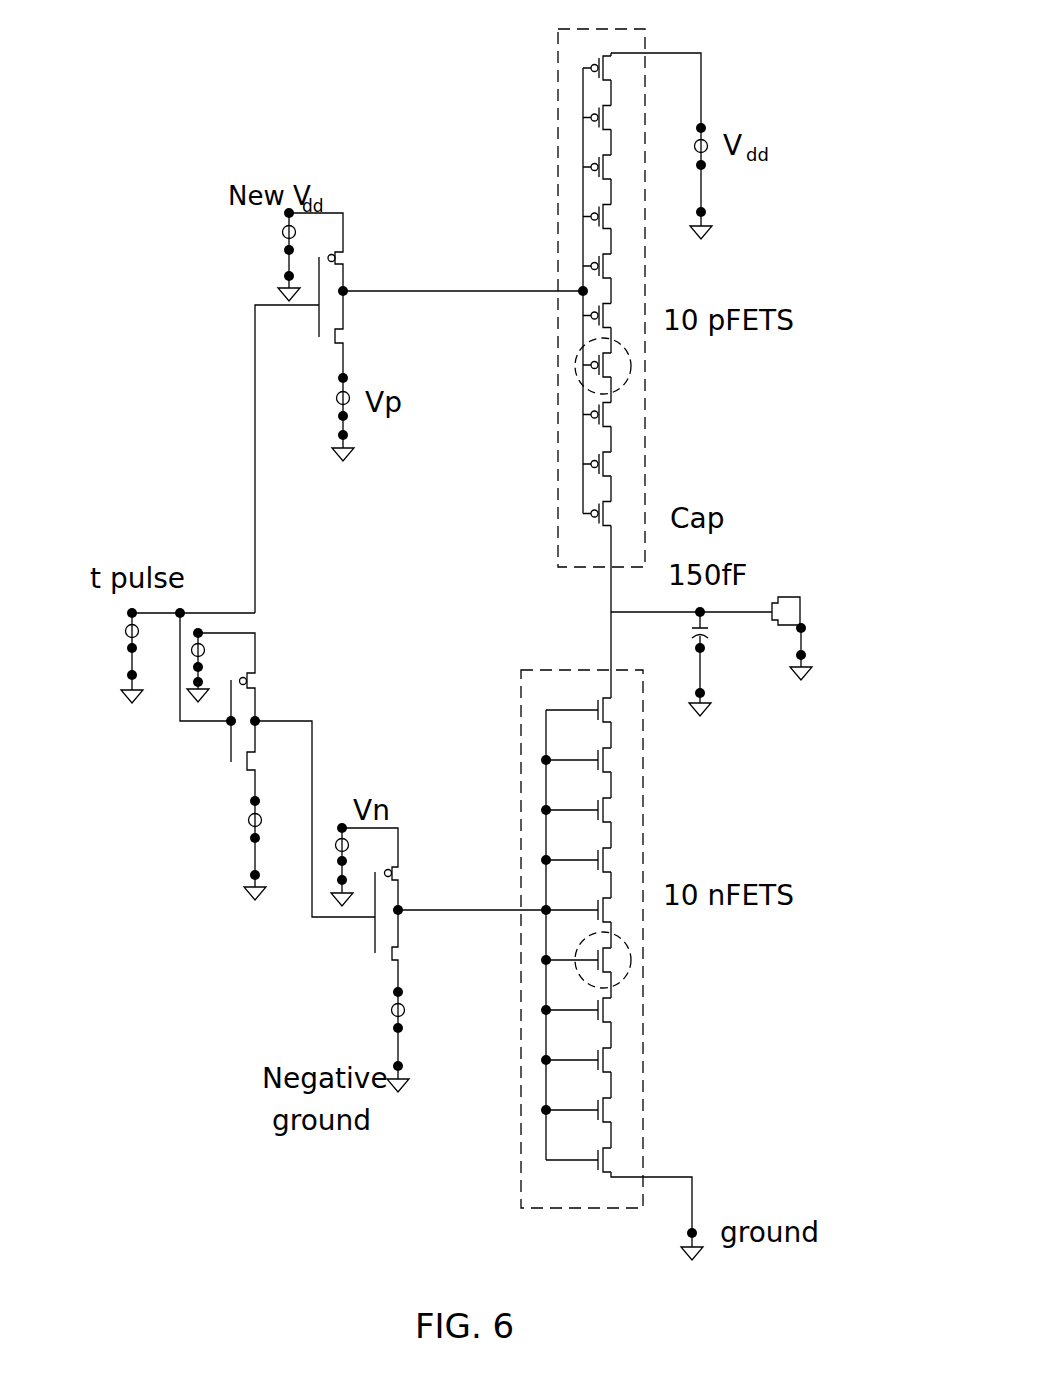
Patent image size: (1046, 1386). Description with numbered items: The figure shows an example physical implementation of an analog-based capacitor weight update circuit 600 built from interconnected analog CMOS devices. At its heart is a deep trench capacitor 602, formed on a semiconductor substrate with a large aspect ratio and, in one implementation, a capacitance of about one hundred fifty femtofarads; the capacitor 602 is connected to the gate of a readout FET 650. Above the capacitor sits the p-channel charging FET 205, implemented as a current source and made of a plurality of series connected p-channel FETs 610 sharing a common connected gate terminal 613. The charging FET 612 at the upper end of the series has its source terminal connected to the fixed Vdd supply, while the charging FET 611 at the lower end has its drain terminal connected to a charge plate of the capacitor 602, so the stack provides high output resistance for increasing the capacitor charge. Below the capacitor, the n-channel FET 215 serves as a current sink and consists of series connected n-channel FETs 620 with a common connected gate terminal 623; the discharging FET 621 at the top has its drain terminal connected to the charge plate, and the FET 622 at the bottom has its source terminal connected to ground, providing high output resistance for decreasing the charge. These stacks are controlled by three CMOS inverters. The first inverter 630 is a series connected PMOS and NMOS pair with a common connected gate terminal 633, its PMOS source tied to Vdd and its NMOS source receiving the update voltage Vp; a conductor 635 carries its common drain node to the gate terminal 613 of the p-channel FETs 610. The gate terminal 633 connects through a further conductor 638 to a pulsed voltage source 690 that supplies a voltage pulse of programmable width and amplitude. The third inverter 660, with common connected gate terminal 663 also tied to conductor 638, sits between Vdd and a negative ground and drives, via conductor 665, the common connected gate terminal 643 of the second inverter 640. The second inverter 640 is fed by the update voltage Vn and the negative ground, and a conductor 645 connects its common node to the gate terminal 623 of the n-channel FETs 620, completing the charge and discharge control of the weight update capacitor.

The capacitor weight update circuit 600 is at (137, 43).
The p-channel charging FET 205 is at (558, 107).
The charging FET 612 is at (586, 62).
The common connected gate terminal 613 is at (583, 243).
The series connected p-channel FETs 610 is at (633, 378).
The charging FET 611 is at (583, 528).
The n-channel FET 215 is at (521, 705).
The discharging FET 621 is at (616, 709).
The common connected gate terminal 623 is at (546, 773).
The series connected n-channel FETs 620 is at (633, 973).
The charging FET 622 is at (594, 1177).
The deep trench capacitor 602 is at (710, 639).
The readout FET 650 is at (810, 618).
The first inverter 630 is at (368, 330).
The common connected gate terminal 633 is at (318, 322).
The conductor 635 is at (440, 297).
The conductor 638 is at (255, 398).
The pulsed voltage source 690 is at (118, 633).
The third inverter 660 is at (263, 756).
The common connected gate terminal 663 is at (226, 748).
The conductor 665 is at (312, 750).
The second inverter 640 is at (401, 954).
The common connected gate terminal 643 is at (375, 945).
The conductor 645 is at (470, 912).